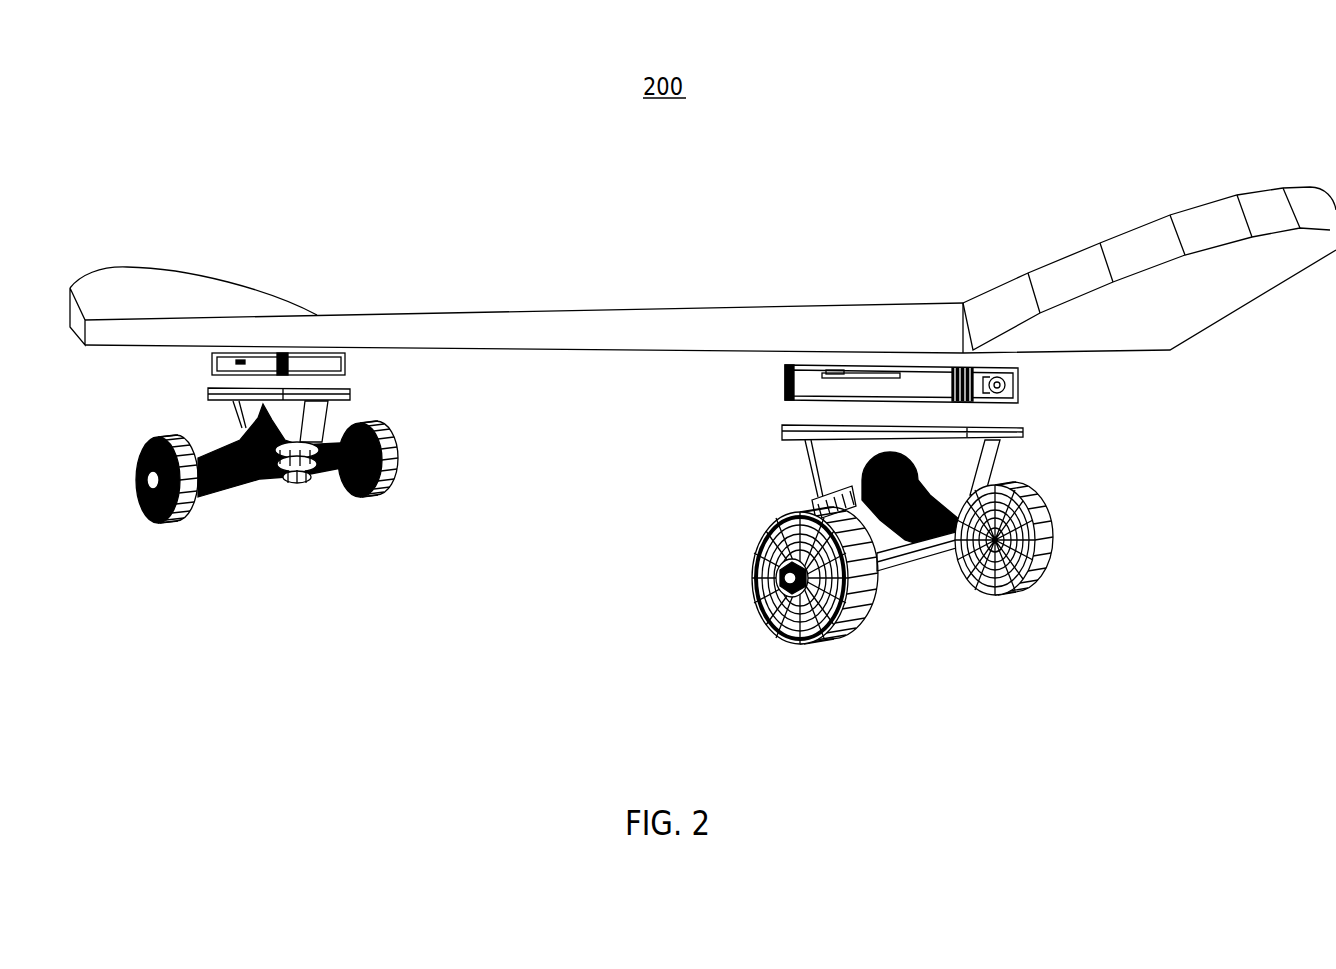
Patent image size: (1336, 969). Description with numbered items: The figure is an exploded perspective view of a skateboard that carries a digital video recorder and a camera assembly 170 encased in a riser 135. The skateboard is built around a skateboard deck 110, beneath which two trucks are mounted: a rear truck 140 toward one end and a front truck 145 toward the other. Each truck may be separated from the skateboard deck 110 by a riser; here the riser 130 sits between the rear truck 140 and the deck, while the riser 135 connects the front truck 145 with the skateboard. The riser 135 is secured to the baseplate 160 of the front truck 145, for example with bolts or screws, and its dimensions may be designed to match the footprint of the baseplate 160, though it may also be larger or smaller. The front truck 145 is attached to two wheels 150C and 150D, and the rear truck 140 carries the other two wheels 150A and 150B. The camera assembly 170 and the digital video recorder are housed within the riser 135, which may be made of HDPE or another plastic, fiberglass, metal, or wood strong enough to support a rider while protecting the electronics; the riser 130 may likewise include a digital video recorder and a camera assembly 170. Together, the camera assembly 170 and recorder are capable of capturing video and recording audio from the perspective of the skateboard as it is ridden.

The skateboard deck 110 is at (493, 323).
The riser 130 is at (338, 365).
The riser 135 is at (783, 380).
The rear truck 140 is at (242, 488).
The front truck 145 is at (930, 573).
The wheel 150A is at (140, 455).
The wheel 150B is at (388, 480).
The wheel 150C is at (860, 617).
The wheel 150D is at (1050, 557).
The baseplate 160 is at (1023, 435).
The camera assembly 170 is at (1008, 380).